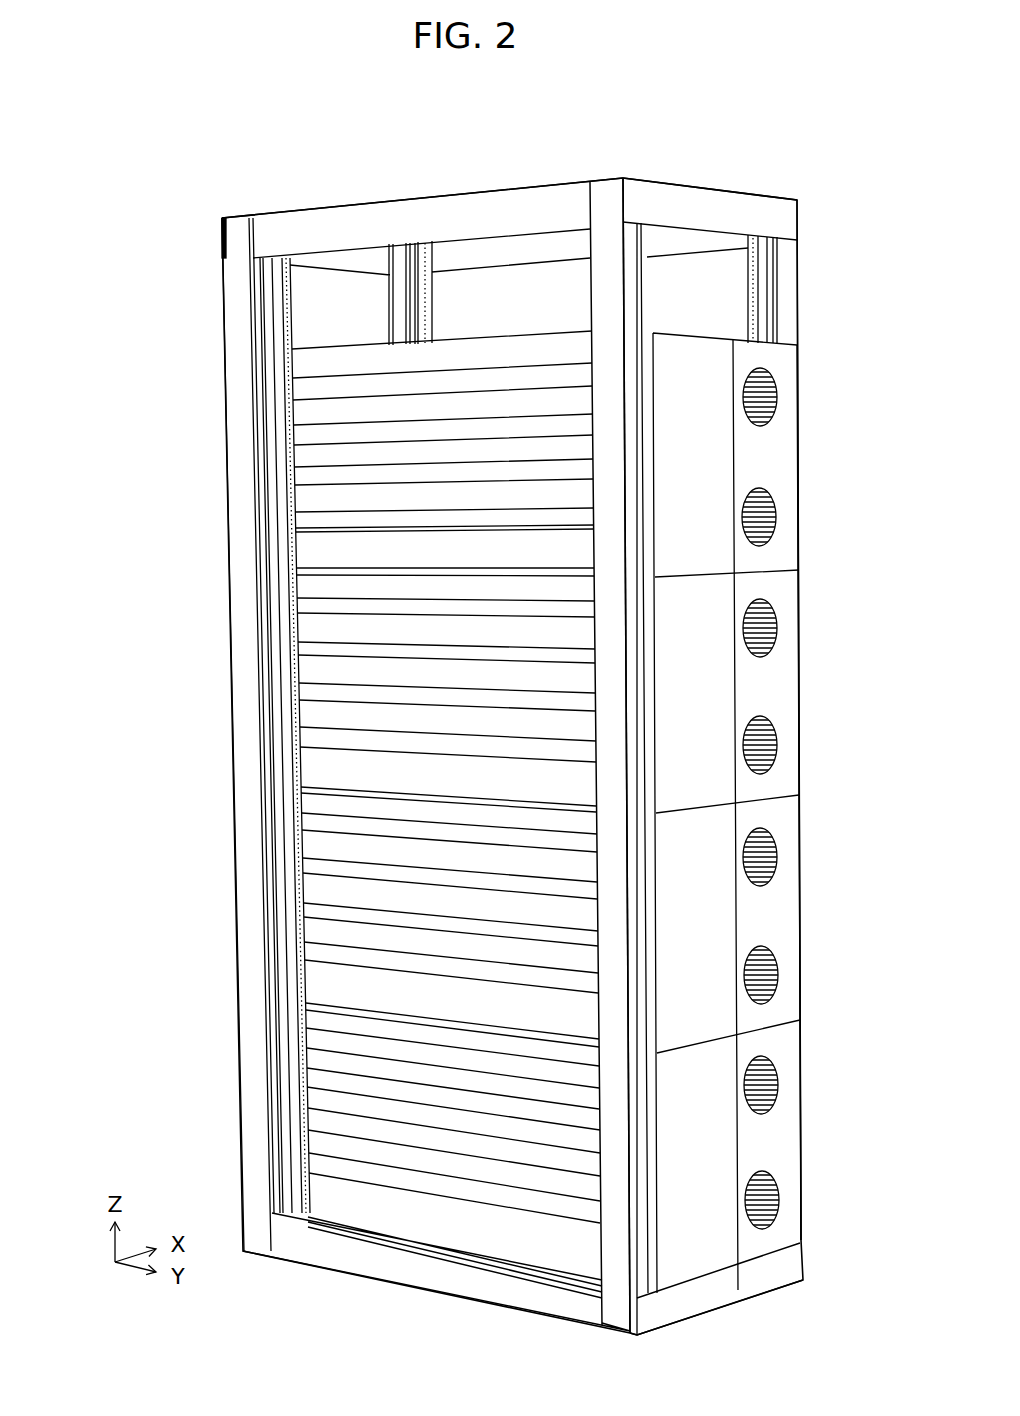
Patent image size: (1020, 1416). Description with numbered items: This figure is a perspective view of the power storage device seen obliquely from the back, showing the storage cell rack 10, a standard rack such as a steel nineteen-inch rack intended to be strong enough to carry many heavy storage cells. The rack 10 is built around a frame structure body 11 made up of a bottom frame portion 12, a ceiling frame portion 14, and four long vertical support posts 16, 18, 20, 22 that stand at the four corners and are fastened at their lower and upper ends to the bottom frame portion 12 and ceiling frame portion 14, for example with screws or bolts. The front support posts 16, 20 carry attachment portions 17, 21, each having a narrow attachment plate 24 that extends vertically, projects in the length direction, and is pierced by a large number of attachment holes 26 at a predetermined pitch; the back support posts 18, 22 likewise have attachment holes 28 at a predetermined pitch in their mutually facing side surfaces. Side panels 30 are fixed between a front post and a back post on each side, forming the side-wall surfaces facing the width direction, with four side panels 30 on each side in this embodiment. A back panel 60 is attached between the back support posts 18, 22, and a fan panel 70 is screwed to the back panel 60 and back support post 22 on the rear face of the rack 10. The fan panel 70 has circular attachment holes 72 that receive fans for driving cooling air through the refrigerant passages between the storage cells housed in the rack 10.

The storage cell rack 10 is at (173, 211).
The frame structure body 11 is at (235, 210).
The bottom frame portion 12 is at (423, 1290).
The ceiling frame portion 14 is at (480, 194).
The support post 16 is at (226, 320).
The attachment portion 17 is at (262, 388).
The support post 18 is at (598, 300).
The support post 20 is at (389, 305).
The attachment portion 21 is at (421, 243).
The support post 22 is at (797, 272).
The attachment plate 24 is at (292, 342).
The attachment hole 26 is at (292, 303).
The attachment hole 28 is at (748, 285).
The side panel 30 is at (330, 550).
The back panel 60 is at (705, 457).
The fan panel 70 is at (765, 697).
The attachment hole 72 is at (765, 395).